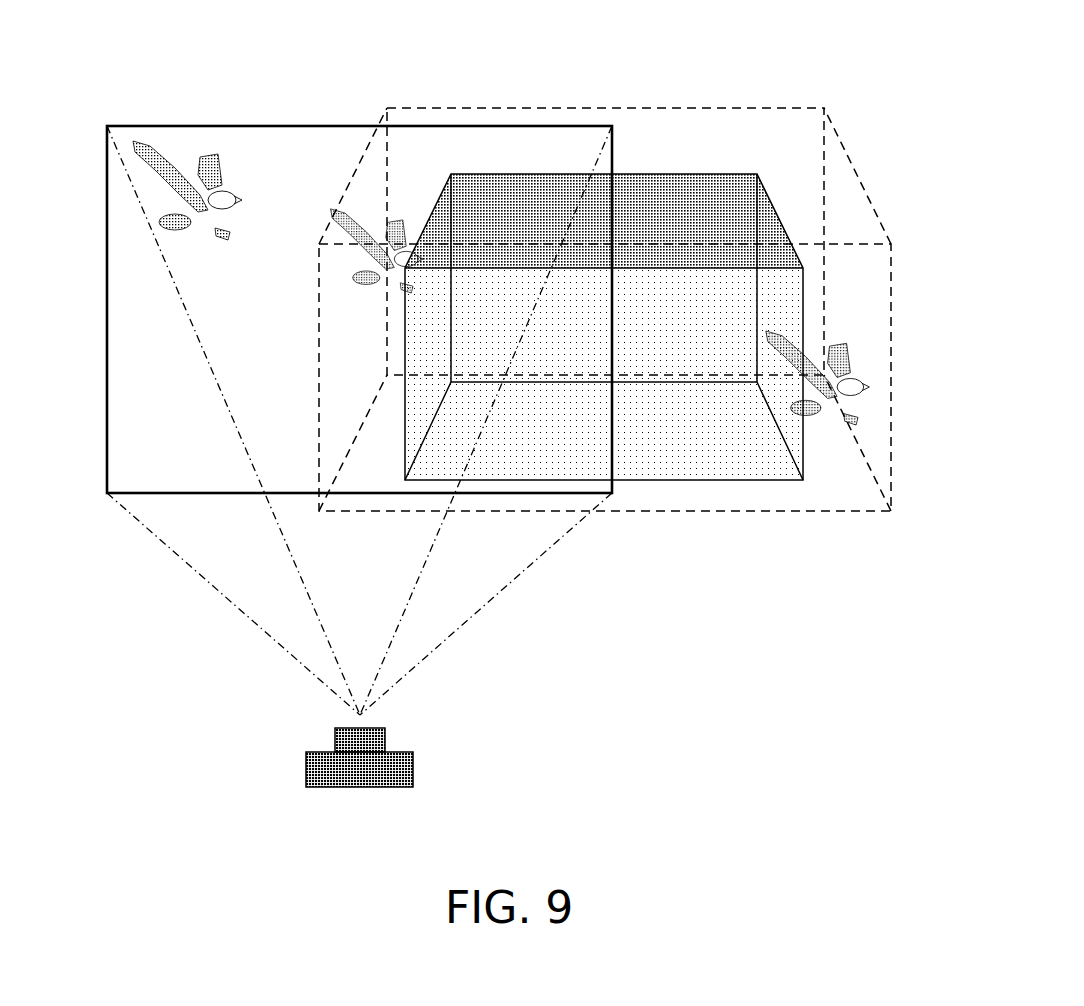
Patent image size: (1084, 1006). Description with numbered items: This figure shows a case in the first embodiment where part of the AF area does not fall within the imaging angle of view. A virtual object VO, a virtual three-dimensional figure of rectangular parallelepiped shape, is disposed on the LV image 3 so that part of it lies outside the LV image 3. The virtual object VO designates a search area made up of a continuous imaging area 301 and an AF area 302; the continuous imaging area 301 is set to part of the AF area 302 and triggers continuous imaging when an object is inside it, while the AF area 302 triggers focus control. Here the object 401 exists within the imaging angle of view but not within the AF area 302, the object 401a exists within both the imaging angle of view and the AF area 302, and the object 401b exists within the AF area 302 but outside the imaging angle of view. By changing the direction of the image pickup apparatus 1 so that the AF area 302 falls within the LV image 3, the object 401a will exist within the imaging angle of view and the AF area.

The image pickup apparatus 1 is at (413, 752).
The LV image 3 is at (106, 162).
The continuous imaging area 301 is at (759, 174).
The AF area 302 is at (826, 108).
The object 401 is at (218, 165).
The object 401a is at (400, 305).
The object 401b is at (866, 372).
The virtual object VO is at (618, 261).